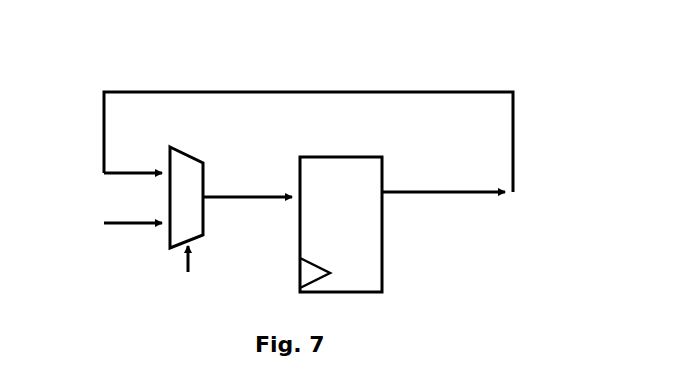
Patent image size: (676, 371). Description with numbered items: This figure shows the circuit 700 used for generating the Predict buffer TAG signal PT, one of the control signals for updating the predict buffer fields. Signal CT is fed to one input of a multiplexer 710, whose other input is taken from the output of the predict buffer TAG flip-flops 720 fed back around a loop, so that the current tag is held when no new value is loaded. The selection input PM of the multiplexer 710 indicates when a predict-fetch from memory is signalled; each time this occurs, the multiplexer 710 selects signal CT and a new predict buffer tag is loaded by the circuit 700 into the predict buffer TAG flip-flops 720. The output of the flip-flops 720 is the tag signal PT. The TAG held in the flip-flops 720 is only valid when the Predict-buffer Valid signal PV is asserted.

The circuit 700 is at (208, 58).
The multiplexer 710 is at (168, 148).
The predict buffer TAG flip-flops 720 is at (341, 224).